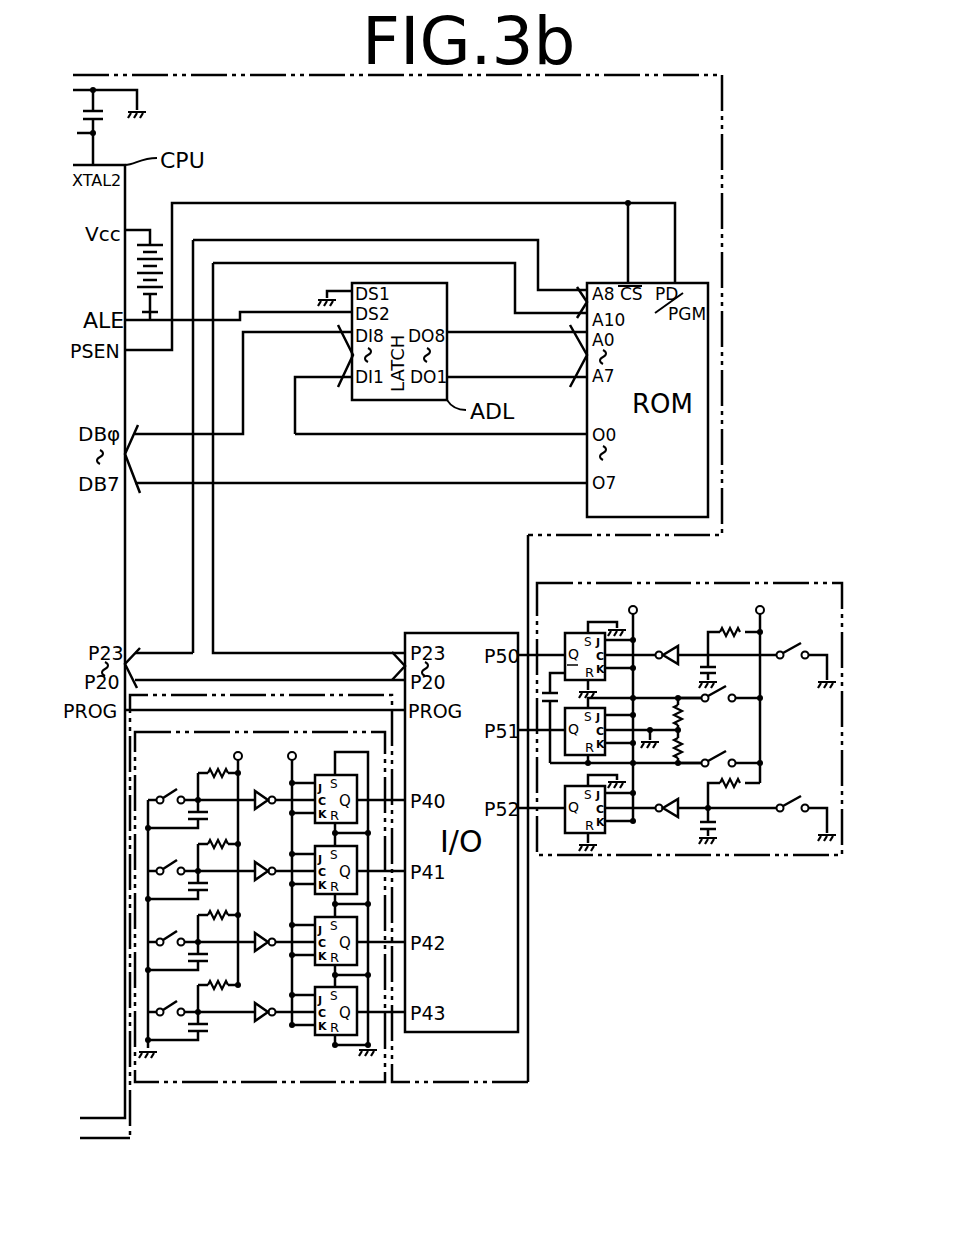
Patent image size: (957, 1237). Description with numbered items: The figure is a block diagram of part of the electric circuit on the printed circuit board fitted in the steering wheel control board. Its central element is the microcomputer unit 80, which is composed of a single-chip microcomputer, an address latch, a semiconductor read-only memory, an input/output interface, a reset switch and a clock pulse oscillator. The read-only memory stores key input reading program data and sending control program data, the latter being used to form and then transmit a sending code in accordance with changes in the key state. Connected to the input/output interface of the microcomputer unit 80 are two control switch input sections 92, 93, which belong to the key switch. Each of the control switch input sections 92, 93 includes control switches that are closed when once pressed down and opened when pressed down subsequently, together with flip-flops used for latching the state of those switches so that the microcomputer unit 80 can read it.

The microcomputer unit 80 is at (722, 130).
The control switch input section 92 is at (203, 1083).
The control switch input section 93 is at (778, 583).